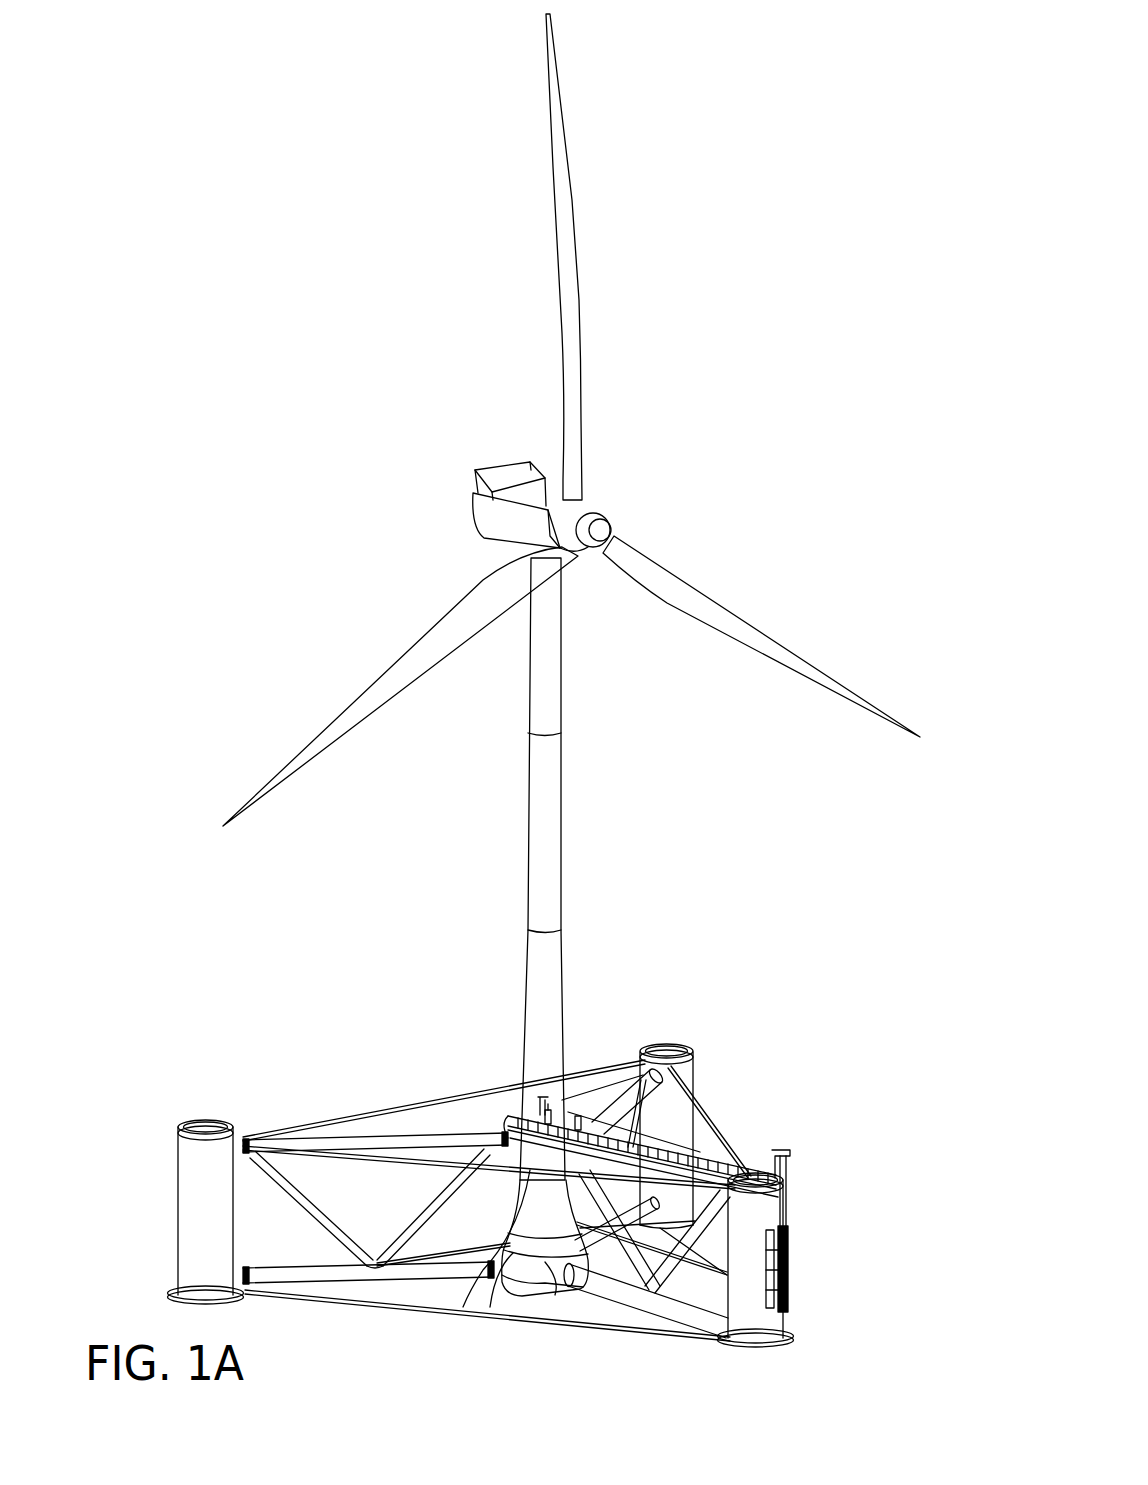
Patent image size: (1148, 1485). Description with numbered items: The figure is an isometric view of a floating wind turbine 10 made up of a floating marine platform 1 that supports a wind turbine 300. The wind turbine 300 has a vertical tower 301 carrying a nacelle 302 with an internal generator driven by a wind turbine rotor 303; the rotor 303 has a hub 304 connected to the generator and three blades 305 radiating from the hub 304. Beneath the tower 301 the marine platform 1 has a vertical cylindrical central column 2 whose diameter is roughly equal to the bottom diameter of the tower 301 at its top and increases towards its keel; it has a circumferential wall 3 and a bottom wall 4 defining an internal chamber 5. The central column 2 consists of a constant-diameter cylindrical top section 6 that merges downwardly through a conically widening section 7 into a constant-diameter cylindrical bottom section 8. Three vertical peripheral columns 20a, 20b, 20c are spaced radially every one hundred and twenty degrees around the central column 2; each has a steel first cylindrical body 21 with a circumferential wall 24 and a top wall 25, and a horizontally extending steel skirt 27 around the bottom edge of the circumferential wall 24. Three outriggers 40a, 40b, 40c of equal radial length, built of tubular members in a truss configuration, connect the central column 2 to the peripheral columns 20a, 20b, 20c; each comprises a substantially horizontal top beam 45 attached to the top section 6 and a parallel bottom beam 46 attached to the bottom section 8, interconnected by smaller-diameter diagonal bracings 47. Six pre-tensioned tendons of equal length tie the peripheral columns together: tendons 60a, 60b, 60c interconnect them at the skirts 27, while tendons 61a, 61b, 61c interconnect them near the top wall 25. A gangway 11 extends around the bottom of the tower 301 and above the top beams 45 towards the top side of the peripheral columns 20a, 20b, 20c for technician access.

The floating wind turbine 10 is at (238, 350).
The floating marine platform 1 is at (200, 1125).
The central column 2 is at (522, 1205).
The circumferential wall 3 is at (500, 1085).
The bottom wall 4 is at (520, 1285).
The internal chamber 5 is at (496, 1250).
The top section 6 is at (476, 1250).
The conically widening section 7 is at (472, 1176).
The bottom section 8 is at (547, 1285).
The gangway 11 is at (536, 1105).
The peripheral column 20a is at (700, 1055).
The peripheral column 20b is at (790, 1205).
The peripheral column 20c is at (185, 1195).
The first cylindrical body 21 is at (697, 1080).
The circumferential wall 24 is at (790, 1295).
The top wall 25 is at (795, 1185).
The skirt 27 is at (170, 1298).
The outrigger 40a is at (620, 1082).
The outrigger 40b is at (637, 1290).
The outrigger 40c is at (315, 1278).
The top beam 45 is at (700, 1100).
The bottom beam 46 is at (718, 1135).
The diagonal bracing 47 is at (615, 1100).
The tendon 60a is at (698, 1290).
The tendon 60b is at (390, 1310).
The tendon 60c is at (433, 1233).
The tendon 61a is at (768, 1150).
The tendon 61b is at (392, 1157).
The tendon 61c is at (355, 1110).
The wind turbine 300 is at (528, 848).
The tower 301 is at (528, 903).
The nacelle 302 is at (515, 470).
The wind turbine rotor 303 is at (608, 517).
The hub 304 is at (612, 532).
The blades 305 is at (577, 272).